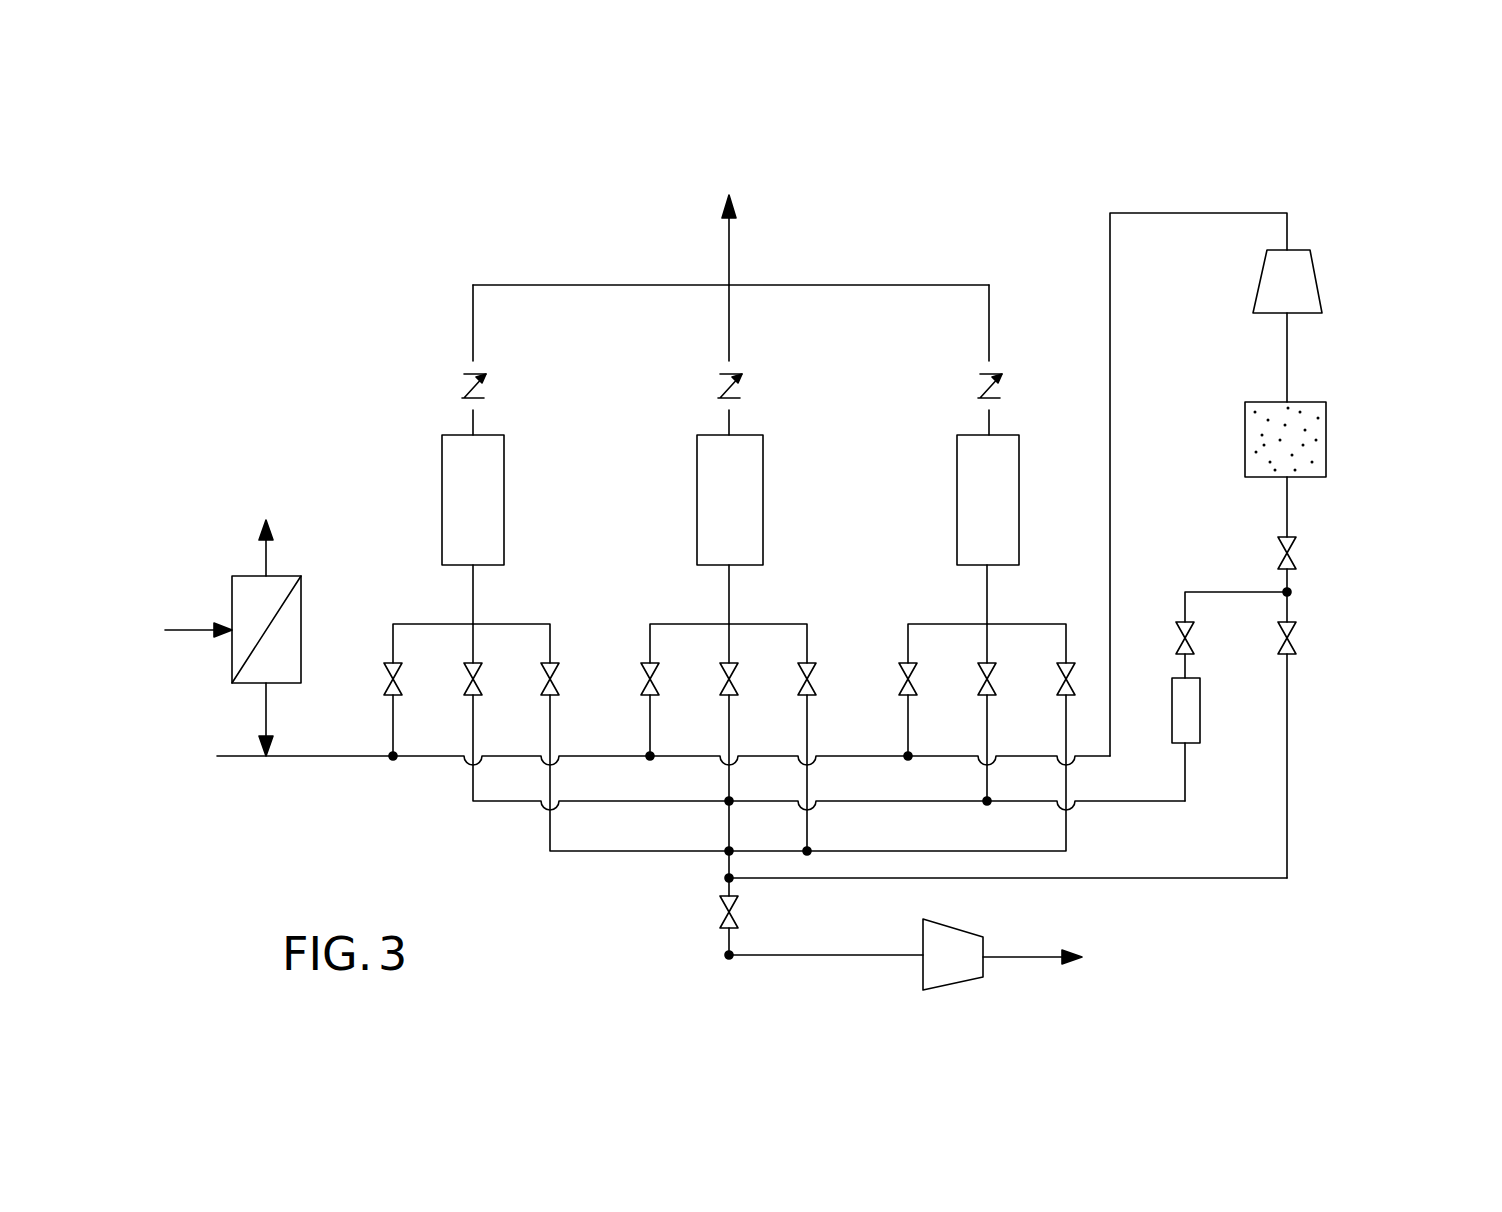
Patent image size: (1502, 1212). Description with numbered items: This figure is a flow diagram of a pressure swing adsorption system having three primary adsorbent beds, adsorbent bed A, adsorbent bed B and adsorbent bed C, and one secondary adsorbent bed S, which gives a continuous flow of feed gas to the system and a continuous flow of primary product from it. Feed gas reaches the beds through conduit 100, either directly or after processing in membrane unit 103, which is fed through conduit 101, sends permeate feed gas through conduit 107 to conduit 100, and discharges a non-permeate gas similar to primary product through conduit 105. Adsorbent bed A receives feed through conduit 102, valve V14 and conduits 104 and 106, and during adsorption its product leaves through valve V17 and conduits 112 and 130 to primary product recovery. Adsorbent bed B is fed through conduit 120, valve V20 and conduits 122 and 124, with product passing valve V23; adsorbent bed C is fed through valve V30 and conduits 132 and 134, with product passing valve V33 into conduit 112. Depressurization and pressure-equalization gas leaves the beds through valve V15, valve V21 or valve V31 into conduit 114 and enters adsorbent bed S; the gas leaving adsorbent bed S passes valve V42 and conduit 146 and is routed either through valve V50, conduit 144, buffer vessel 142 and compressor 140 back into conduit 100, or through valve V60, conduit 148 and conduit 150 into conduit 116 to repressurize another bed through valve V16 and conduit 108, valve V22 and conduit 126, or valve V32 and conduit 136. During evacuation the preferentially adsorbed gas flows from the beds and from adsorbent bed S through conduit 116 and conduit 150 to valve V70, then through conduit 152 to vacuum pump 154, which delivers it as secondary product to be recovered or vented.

The feed conduit 100 is at (242, 757).
The membrane feed conduit 101 is at (205, 634).
The adsorbent bed A feed conduit 102 is at (393, 725).
The membrane unit 103 is at (290, 618).
The adsorbent bed A inlet conduit 104 is at (425, 624).
The non-permeate conduit 105 is at (266, 557).
The adsorbent bed A conduit 106 is at (473, 594).
The permeate conduit 107 is at (266, 716).
The adsorbent bed A evacuation conduit 108 is at (508, 624).
The primary product header conduit 112 is at (615, 285).
The secondary bed conduit 114 is at (490, 801).
The evacuation conduit 116 is at (563, 851).
The adsorbent bed B feed conduit 120 is at (650, 728).
The adsorbent bed B inlet conduit 122 is at (687, 624).
The adsorbent bed B conduit 124 is at (730, 595).
The adsorbent bed B evacuation conduit 126 is at (808, 644).
The primary product conduit 130 is at (730, 248).
The adsorbent bed C inlet conduit 132 is at (908, 628).
The adsorbent bed C conduit 134 is at (988, 598).
The adsorbent bed C evacuation conduit 136 is at (1066, 636).
The compressor 140 is at (1262, 280).
The buffer vessel 142 is at (1245, 430).
The buffer conduit 144 is at (1288, 510).
The secondary bed outlet conduit 146 is at (1245, 592).
The equalization return conduit 148 is at (1287, 722).
The evacuation header conduit 150 is at (729, 865).
The vacuum pump conduit 152 is at (815, 955).
The vacuum pump 154 is at (963, 930).
The valve V14 is at (372, 662).
The valve V15 is at (450, 663).
The valve V16 is at (529, 662).
The valve V17 is at (449, 360).
The valve V20 is at (628, 662).
The valve V21 is at (709, 662).
The valve V22 is at (784, 662).
The valve V23 is at (760, 360).
The valve V30 is at (887, 693).
The valve V31 is at (966, 662).
The valve V32 is at (1043, 662).
The valve V33 is at (1015, 360).
The valve V42 is at (1211, 639).
The valve V50 is at (1312, 579).
The valve V60 is at (1312, 639).
The valve V70 is at (755, 912).
The adsorbent bed A is at (473, 500).
The adsorbent bed B is at (730, 500).
The adsorbent bed C is at (988, 500).
The secondary adsorbent bed S is at (1186, 727).